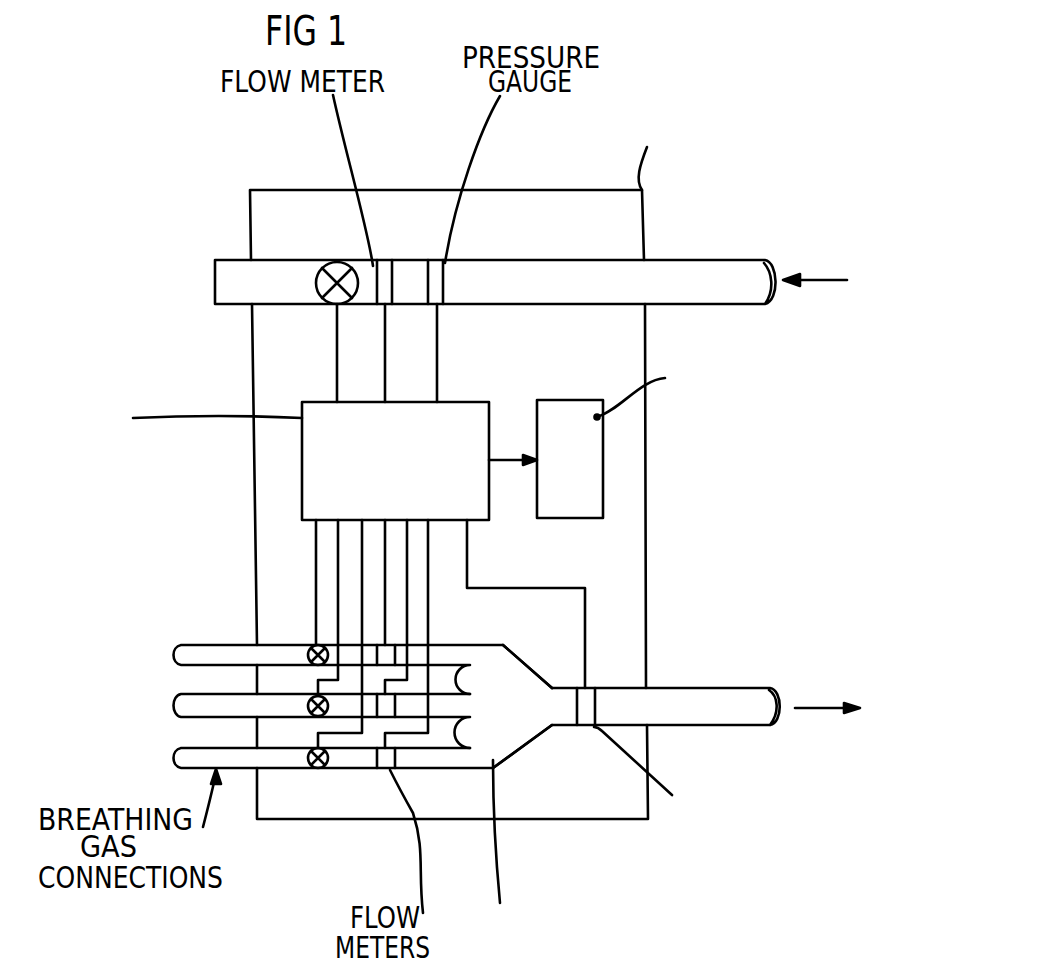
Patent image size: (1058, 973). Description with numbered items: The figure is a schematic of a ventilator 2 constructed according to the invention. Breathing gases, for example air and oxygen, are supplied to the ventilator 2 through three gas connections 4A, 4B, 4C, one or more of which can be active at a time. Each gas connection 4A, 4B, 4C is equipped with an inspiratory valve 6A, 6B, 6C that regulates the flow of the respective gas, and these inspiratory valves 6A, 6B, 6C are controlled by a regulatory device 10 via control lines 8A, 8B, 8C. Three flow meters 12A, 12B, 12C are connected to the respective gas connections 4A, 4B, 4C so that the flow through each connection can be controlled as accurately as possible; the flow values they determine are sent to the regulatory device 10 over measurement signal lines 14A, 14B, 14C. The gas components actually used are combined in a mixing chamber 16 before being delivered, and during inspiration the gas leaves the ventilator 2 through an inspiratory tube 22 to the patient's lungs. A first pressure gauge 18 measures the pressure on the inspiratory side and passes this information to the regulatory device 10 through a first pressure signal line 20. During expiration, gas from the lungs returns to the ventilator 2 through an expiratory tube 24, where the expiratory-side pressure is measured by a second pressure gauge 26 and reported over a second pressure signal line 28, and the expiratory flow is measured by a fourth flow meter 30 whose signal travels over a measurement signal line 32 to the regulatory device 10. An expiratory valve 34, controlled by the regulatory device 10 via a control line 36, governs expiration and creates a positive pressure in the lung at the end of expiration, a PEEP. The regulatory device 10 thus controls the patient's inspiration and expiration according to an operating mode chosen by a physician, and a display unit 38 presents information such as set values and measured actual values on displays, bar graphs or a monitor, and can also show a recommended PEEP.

The ventilator 2 is at (536, 190).
The gas connection 4A is at (176, 652).
The gas connection 4B is at (176, 703).
The gas connection 4C is at (176, 757).
The inspiratory valve 6A is at (312, 647).
The inspiratory valve 6B is at (310, 706).
The inspiratory valve 6C is at (319, 769).
The control line 8A is at (316, 535).
The control line 8B is at (338, 550).
The control line 8C is at (362, 575).
The regulatory device 10 is at (328, 437).
The flow meter 12A is at (398, 653).
The flow meter 12B is at (383, 709).
The flow meter 12C is at (387, 773).
The measurement signal line 14A is at (385, 565).
The measurement signal line 14B is at (405, 547).
The measurement signal line 14C is at (430, 572).
The mixing chamber 16 is at (516, 735).
The first pressure gauge 18 is at (588, 727).
The first pressure signal line 20 is at (588, 630).
The inspiratory tube 22 is at (713, 727).
The expiratory tube 24 is at (711, 260).
The second pressure gauge 26 is at (435, 266).
The second pressure signal line 28 is at (437, 322).
The fourth flow meter 30 is at (382, 266).
The measurement signal line 32 is at (385, 348).
The expiratory valve 34 is at (337, 264).
The control line 36 is at (338, 378).
The display unit 38 is at (578, 437).